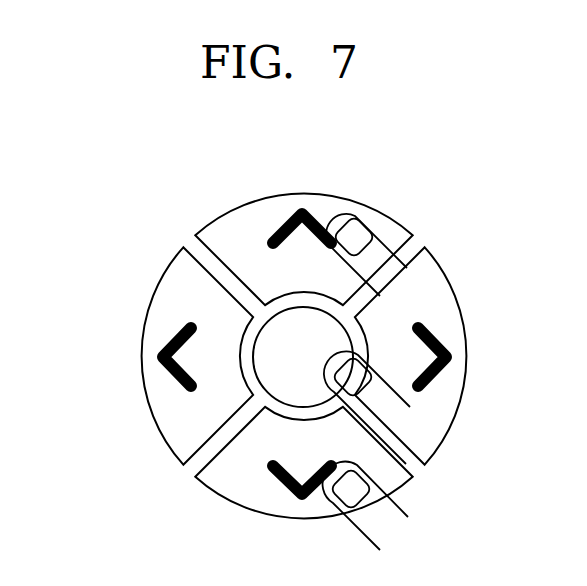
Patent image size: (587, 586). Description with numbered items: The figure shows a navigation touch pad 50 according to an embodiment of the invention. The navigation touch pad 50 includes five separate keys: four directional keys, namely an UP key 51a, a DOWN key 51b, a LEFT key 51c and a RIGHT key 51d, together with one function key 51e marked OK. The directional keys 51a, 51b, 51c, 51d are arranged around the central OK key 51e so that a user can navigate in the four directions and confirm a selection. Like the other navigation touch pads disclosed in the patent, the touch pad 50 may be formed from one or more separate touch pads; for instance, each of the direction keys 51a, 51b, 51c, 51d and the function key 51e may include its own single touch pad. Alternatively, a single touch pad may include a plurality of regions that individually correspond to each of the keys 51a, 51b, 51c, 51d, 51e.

The navigation touch pad 50 is at (108, 290).
The UP key 51a is at (378, 223).
The DOWN key 51b is at (377, 493).
The LEFT key 51c is at (165, 432).
The RIGHT key 51d is at (437, 430).
The function (OK) key 51e is at (342, 335).